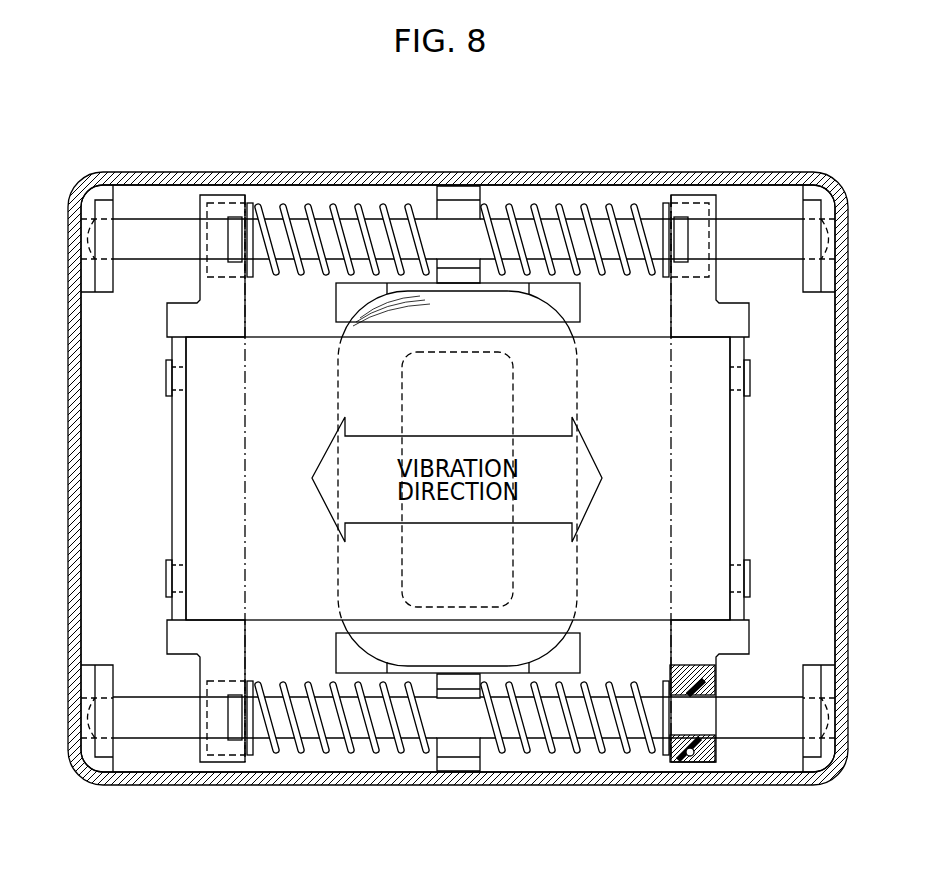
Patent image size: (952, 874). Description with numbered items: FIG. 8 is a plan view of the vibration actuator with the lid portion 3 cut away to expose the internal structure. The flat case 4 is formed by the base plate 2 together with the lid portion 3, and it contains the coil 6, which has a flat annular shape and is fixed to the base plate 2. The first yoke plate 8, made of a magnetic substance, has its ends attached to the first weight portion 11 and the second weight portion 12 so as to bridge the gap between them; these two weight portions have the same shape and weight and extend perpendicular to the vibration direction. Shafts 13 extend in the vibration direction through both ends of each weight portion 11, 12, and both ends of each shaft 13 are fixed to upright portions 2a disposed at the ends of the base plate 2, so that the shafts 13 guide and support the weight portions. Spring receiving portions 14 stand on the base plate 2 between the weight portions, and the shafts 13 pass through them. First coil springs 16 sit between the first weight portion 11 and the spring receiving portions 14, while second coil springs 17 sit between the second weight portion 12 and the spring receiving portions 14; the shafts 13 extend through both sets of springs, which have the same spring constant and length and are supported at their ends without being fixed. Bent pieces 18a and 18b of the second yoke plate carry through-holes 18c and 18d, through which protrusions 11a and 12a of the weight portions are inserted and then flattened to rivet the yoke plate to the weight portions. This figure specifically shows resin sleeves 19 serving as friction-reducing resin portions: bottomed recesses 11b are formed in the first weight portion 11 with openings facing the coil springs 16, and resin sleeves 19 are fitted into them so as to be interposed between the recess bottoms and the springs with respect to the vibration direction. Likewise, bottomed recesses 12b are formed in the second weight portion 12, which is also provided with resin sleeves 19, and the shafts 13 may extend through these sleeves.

The base plate 2 is at (812, 540).
The upright portion 2a is at (103, 214).
The lid portion 3 is at (897, 520).
The case 4 is at (500, 478).
The coil 6 is at (577, 570).
The first yoke plate 8 is at (627, 372).
The first weight portion 11 is at (697, 318).
The protrusion 11a is at (751, 378).
The bottomed recess 11b is at (700, 270).
The second weight portion 12 is at (205, 318).
The protrusion 12a is at (166, 378).
The bottomed recess 12b is at (235, 272).
The shaft 13 is at (760, 236).
The spring receiving portion 14 is at (447, 188).
The first coil spring 16 is at (612, 200).
The second coil spring 17 is at (343, 200).
The bent piece 18a is at (738, 445).
The bent piece 18b is at (178, 445).
The through-hole 18c is at (738, 362).
The through-hole 18d is at (178, 362).
The resin sleeve 19 is at (224, 198).